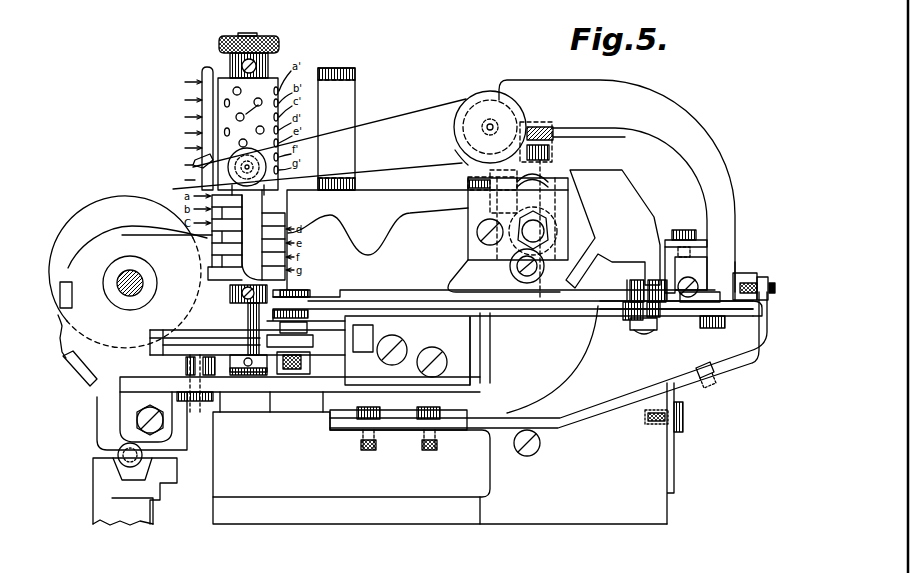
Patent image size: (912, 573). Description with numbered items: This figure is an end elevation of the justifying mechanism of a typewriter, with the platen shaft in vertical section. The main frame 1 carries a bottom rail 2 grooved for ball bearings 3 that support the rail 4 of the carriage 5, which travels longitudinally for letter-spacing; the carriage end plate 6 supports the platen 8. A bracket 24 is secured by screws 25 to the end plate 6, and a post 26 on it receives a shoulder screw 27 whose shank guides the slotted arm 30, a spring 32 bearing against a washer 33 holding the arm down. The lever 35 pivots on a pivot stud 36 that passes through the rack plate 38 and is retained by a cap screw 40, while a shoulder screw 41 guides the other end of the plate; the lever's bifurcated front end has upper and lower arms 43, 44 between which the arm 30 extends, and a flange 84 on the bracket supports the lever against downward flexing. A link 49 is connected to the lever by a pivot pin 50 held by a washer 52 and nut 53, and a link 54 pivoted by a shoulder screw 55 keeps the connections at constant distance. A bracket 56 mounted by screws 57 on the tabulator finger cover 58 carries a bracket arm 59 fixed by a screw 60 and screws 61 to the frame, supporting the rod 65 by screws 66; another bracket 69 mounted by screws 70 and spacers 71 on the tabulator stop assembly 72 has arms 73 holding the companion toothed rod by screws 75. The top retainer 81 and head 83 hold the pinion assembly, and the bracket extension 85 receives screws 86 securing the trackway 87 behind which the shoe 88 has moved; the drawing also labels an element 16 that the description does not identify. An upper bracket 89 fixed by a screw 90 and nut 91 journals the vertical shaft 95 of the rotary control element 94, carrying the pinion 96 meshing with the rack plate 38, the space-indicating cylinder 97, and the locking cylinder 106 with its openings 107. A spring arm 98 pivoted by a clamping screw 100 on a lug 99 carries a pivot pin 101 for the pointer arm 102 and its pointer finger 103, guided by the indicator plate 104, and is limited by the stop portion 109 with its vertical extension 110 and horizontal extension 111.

The main frame 1 is at (452, 520).
The bottom rail 2 is at (120, 478).
The ball bearings 3 is at (121, 460).
The rail 4 is at (100, 434).
The carriage 5 is at (370, 246).
The carriage end plate 6 is at (62, 339).
The platen 8 is at (106, 213).
The bar 16 is at (755, 310).
The bracket 24 is at (323, 382).
The screws 25 is at (136, 421).
The post 26 is at (272, 385).
The shoulder screw 27 is at (330, 300).
The arm 30 is at (310, 370).
The spring 32 is at (370, 330).
The washer 33 is at (355, 301).
The lever 35 is at (511, 320).
The pivot stud 36 is at (170, 359).
The rack plate 38 is at (103, 381).
The cap screw 40 is at (203, 400).
The shoulder screw 41 is at (388, 418).
The upper arm 43 is at (174, 330).
The lower arm 44 is at (152, 347).
The link 49 is at (525, 360).
The pivot pin 50 is at (626, 284).
The washer 52 is at (632, 328).
The nut 53 is at (652, 338).
The link 54 is at (498, 292).
The shoulder screw 55 is at (312, 292).
The bracket 56 is at (676, 466).
The screws 57 is at (685, 424).
The tabulator finger cover 58 is at (670, 500).
The bracket arm 59 is at (755, 352).
The screw 60 is at (704, 365).
The screws 61 is at (386, 430).
The rod 65 is at (760, 276).
The screws 66 is at (776, 287).
The bracket 69 is at (565, 138).
The screws 70 is at (545, 122).
The spacers 71 is at (549, 153).
The tabulator stop assembly 72 is at (545, 283).
The arms 73 is at (655, 113).
The screws 75 is at (697, 292).
The top retainer 81 is at (738, 273).
The head 83 is at (712, 328).
The flange 84 is at (490, 340).
The bracket extension 85 is at (665, 272).
The screws 86 is at (676, 230).
The trackway 87 is at (707, 250).
The shoe 88 is at (710, 298).
The upper bracket 89 is at (384, 176).
The screw 90 is at (470, 232).
The nut 91 is at (548, 220).
The rotary control element 94 is at (290, 43).
The vertical shaft 95 is at (246, 319).
The pinion 96 is at (225, 393).
The space-indicating cylinder 97 is at (278, 193).
The spring arm 98 is at (378, 119).
The lug 99 is at (460, 170).
The clamping screw 100 is at (482, 95).
The pivot pin 101 is at (212, 196).
The pointer arm 102 is at (287, 215).
The pointer finger 103 is at (207, 276).
The indicator plate 104 is at (203, 70).
The cylinder 106 is at (268, 77).
The openings 107 is at (236, 88).
The stop portion 109 is at (355, 211).
The vertical extension 110 is at (348, 103).
The horizontal extension 111 is at (340, 72).